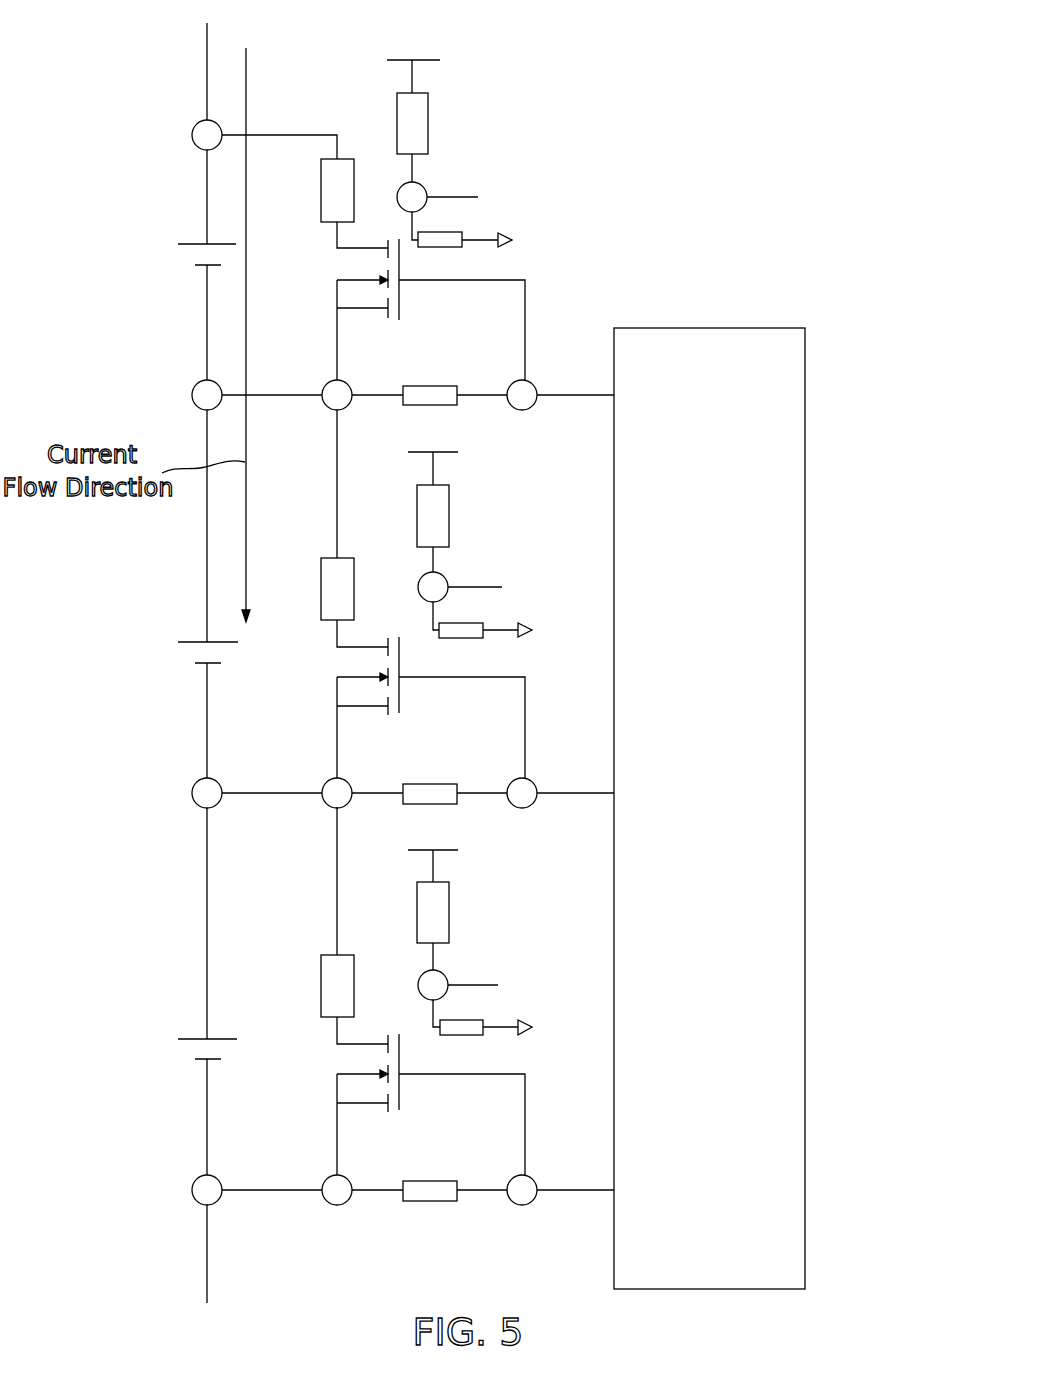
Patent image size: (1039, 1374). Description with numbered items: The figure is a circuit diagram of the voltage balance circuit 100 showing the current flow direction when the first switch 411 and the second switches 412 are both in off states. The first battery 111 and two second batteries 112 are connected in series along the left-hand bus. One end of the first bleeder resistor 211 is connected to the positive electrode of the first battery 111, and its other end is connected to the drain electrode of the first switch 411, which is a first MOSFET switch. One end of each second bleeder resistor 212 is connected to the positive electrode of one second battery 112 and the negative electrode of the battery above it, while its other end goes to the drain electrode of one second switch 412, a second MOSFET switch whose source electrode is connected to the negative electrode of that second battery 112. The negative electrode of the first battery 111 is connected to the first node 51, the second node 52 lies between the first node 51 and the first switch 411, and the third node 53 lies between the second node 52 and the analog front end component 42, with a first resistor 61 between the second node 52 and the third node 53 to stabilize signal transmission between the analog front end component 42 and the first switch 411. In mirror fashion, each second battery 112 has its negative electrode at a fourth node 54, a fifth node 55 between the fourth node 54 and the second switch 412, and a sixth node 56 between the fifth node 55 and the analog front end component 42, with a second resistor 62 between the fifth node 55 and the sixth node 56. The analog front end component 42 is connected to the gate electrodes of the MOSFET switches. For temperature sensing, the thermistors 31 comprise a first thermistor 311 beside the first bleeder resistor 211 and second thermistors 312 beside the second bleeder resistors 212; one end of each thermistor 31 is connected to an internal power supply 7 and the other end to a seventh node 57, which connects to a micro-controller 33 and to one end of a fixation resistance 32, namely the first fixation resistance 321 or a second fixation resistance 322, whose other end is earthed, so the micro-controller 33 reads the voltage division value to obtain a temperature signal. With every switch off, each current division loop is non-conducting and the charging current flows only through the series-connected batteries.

The voltage balance circuit 100 is at (70, 12).
The internal power supply 7 is at (427, 60).
The thermistor 31 is at (411, 531).
The first thermistor 311 is at (397, 106).
The second thermistor 312 is at (417, 500).
The fixation resistance 32 is at (480, 633).
The first fixation resistance 321 is at (446, 247).
The second fixation resistance 322 is at (462, 638).
The micro-controller 33 is at (476, 196).
The analog front end component 42 is at (805, 713).
The first node 51 is at (197, 383).
The second node 52 is at (329, 383).
The third node 53 is at (534, 384).
The fourth node 54 is at (195, 785).
The fifth node 55 is at (327, 785).
The sixth node 56 is at (534, 782).
The seventh node 57 is at (402, 188).
The first resistor 61 is at (424, 386).
The second resistor 62 is at (424, 784).
The first battery 111 is at (190, 243).
The second battery 112 is at (193, 641).
The first bleeder resistor 211 is at (321, 170).
The second bleeder resistor 212 is at (321, 578).
The first switch 411 is at (400, 290).
The second switch 412 is at (400, 690).